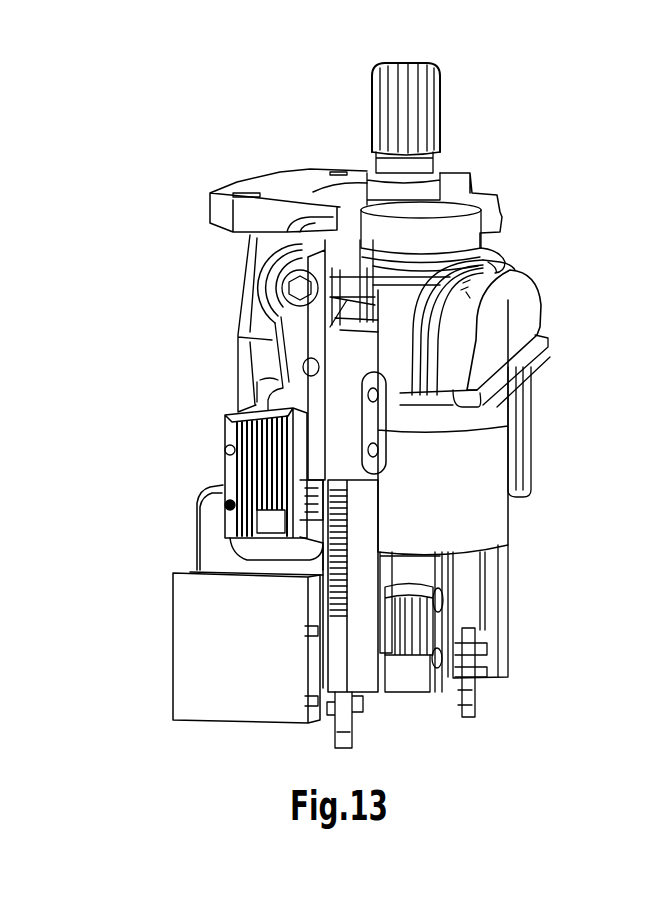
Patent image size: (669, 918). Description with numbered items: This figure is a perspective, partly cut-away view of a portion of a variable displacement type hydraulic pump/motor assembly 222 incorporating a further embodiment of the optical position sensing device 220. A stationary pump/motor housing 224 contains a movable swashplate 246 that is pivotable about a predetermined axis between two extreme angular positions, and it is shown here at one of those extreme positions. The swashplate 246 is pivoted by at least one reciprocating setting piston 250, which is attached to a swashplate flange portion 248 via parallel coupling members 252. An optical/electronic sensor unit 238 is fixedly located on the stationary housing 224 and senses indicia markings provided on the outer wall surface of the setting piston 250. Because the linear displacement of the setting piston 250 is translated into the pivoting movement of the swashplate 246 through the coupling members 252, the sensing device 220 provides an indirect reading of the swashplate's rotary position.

The variable displacement type hydraulic pump/motor assembly 222 is at (533, 106).
The optical position sensing device 220 is at (214, 437).
The stationary pump/motor housing 224 is at (205, 679).
The optical/electronic sensor unit 238 is at (226, 504).
The swashplate 246 is at (510, 307).
The swashplate flange portion 248 is at (348, 358).
The reciprocating setting piston 250 is at (355, 657).
The coupling members 252 is at (382, 432).